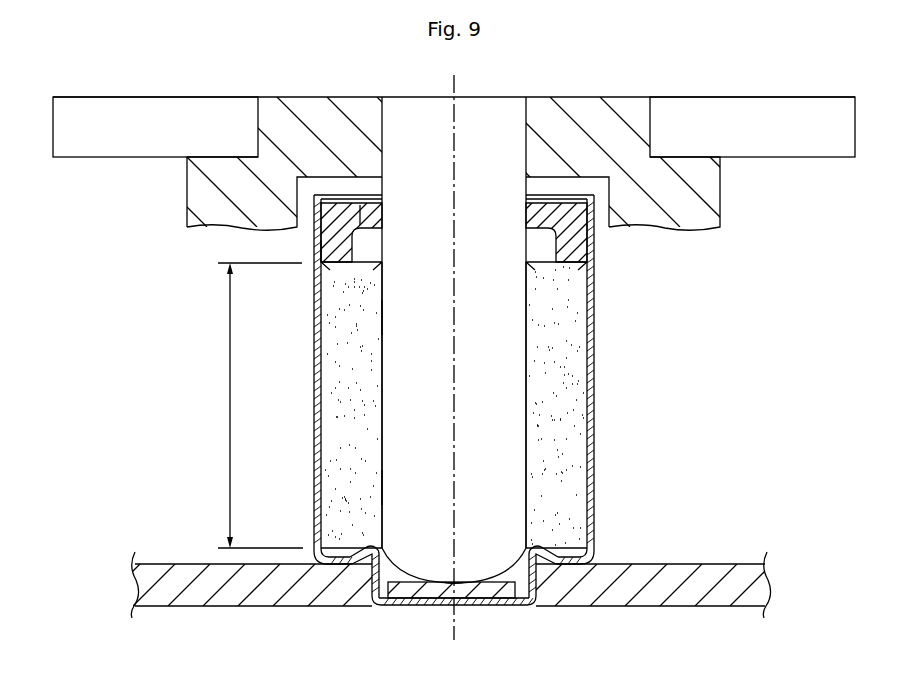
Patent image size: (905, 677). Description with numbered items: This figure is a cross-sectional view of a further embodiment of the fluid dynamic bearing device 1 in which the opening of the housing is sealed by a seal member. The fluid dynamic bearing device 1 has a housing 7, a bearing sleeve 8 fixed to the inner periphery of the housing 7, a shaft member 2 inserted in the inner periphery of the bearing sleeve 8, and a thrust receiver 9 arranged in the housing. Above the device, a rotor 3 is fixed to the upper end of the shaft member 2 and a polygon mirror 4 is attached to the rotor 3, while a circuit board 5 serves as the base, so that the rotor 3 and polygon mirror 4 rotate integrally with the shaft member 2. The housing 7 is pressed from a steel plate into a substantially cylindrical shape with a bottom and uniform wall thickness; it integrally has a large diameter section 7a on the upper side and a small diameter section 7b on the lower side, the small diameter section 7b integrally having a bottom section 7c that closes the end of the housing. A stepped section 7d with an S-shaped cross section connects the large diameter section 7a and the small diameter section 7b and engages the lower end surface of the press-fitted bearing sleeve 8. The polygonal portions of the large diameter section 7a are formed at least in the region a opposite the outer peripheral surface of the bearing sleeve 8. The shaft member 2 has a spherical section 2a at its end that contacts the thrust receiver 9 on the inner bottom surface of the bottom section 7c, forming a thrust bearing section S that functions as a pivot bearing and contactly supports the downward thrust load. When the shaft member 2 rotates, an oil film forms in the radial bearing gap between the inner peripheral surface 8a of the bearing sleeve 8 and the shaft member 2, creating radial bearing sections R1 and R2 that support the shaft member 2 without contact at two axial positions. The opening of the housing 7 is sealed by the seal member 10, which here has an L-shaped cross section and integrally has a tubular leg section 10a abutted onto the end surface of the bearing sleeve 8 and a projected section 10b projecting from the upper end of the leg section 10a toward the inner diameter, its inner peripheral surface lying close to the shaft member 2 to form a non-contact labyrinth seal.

The fluid dynamic bearing device 1 is at (469, 355).
The shaft member 2 is at (503, 374).
The spherical section 2a is at (448, 586).
The rotor 3 is at (690, 212).
The polygon mirror 4 is at (794, 136).
The circuit board 5 is at (677, 579).
The housing 7 is at (447, 423).
The large diameter section 7a is at (316, 432).
The small diameter section 7b is at (370, 574).
The bottom section 7c is at (508, 605).
The stepped section 7d is at (343, 567).
The bearing sleeve 8 is at (448, 405).
The inner peripheral surface of bearing sleeve 8a is at (378, 404).
The thrust receiver 9 is at (399, 590).
The seal member 10 is at (455, 160).
The leg section 10a is at (323, 255).
The projected section 10b is at (368, 215).
The radial bearing section R1 is at (374, 317).
The radial bearing section R2 is at (374, 487).
The thrust bearing section S is at (461, 585).
The region a is at (253, 405).